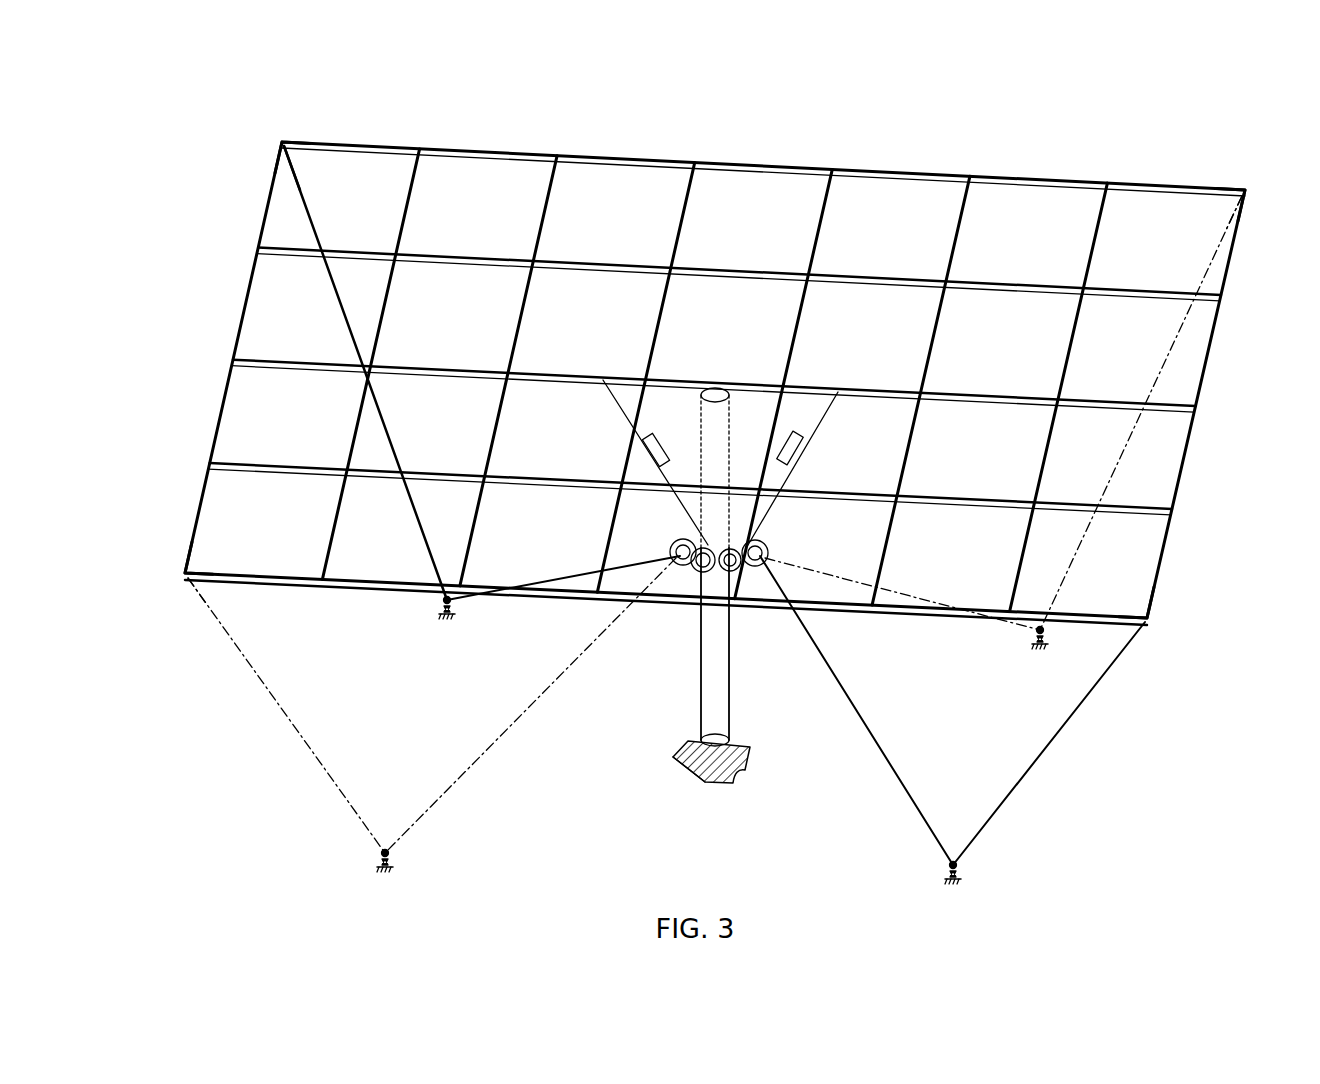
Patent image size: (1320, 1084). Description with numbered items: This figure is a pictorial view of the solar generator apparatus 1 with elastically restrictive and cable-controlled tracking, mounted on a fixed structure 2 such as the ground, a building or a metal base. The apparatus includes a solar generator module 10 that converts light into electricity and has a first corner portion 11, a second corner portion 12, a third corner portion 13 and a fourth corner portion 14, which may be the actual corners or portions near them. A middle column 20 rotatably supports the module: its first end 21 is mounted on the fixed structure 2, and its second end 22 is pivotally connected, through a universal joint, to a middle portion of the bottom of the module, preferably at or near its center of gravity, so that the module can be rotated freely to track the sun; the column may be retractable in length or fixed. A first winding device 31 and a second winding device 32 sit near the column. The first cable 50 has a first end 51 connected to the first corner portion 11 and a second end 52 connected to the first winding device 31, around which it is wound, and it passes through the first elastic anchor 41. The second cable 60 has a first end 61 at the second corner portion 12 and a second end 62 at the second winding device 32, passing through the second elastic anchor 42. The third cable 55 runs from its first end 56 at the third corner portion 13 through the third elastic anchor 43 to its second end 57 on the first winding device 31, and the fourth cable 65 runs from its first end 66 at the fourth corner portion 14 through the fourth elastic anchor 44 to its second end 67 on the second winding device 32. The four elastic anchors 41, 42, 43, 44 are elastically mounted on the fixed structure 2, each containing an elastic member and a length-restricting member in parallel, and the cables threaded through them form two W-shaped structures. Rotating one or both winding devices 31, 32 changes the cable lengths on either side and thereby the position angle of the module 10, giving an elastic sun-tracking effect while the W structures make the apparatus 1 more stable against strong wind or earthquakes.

The solar generator apparatus 1 is at (1180, 170).
The fixed structure 2 is at (725, 764).
The solar generator module 10 is at (905, 172).
The first corner portion 11 is at (1241, 190).
The second corner portion 12 is at (1140, 612).
The third corner portion 13 is at (186, 577).
The fourth corner portion 14 is at (297, 157).
The middle column 20 is at (710, 702).
The first end 21 is at (690, 762).
The second end 22 is at (710, 402).
The first winding device 31 is at (675, 548).
The second winding device 32 is at (768, 546).
The first elastic anchor 41 is at (1042, 644).
The second elastic anchor 42 is at (958, 867).
The third elastic anchor 43 is at (388, 846).
The fourth elastic anchor 44 is at (447, 614).
The first cable 50 is at (1130, 438).
The first end 51 is at (1240, 207).
The second end 52 is at (708, 543).
The third cable 55 is at (520, 730).
The first end 56 is at (193, 582).
The second end 57 is at (672, 553).
The second cable 60 is at (868, 740).
The first end 61 is at (1140, 630).
The second end 62 is at (771, 560).
The fourth cable 65 is at (337, 292).
The first end 66 is at (288, 167).
The second end 67 is at (711, 598).